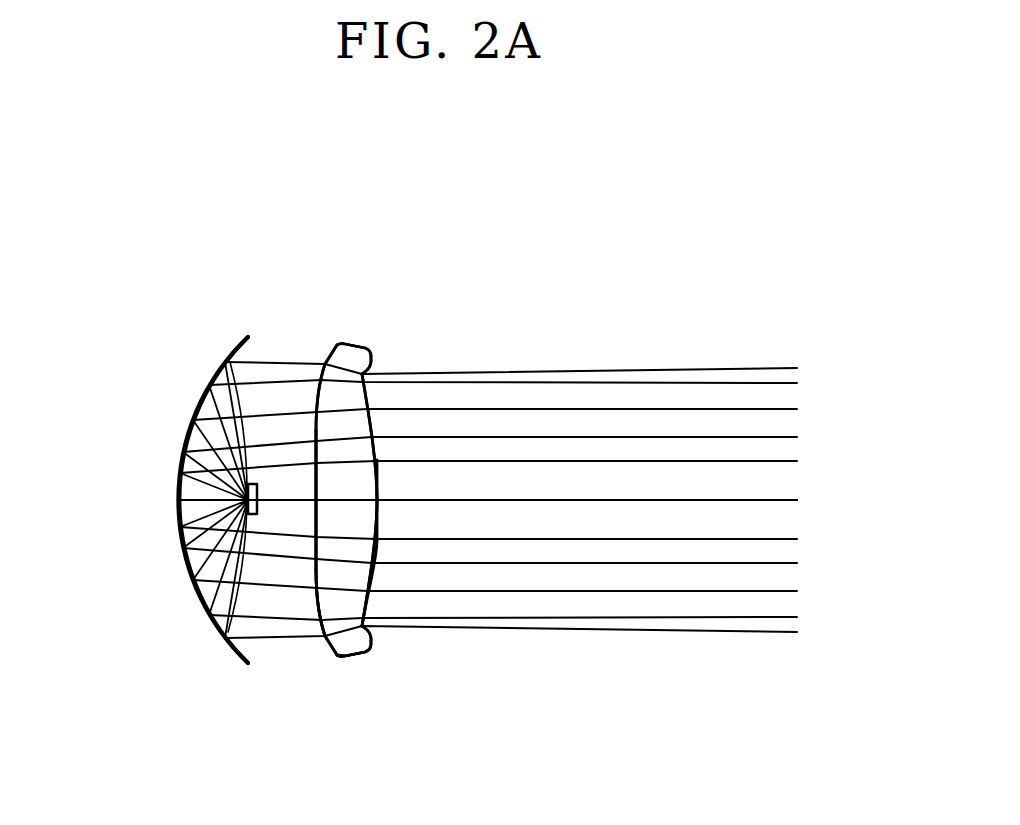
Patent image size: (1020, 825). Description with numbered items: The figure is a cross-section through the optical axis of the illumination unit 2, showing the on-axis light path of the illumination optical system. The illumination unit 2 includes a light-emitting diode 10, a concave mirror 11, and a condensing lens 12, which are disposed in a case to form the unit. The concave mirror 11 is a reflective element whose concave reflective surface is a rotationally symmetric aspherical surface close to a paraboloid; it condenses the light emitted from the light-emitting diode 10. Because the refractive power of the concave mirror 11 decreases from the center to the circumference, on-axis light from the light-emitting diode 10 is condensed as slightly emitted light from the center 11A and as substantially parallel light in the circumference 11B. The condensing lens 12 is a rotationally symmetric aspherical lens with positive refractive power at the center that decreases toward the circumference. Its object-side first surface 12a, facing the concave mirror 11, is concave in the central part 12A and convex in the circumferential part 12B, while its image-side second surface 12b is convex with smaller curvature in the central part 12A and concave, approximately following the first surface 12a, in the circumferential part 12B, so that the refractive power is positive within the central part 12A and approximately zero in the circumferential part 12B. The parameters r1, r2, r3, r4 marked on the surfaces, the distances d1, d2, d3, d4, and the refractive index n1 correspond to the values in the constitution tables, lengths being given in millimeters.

The illumination unit 2 is at (321, 284).
The light-emitting diode 10 is at (258, 495).
The concave mirror 11 is at (204, 497).
The center of the concave mirror 11A is at (165, 425).
The circumference of the concave mirror 11B is at (165, 357).
The condensing lens 12 is at (396, 504).
The first surface 12a is at (325, 363).
The second surface 12b is at (373, 362).
The central part 12A is at (395, 607).
The circumferential part 12B is at (395, 389).
The radius of curvature parameter r1 is at (246, 469).
The radius of curvature parameter r2 is at (250, 663).
The radius of curvature parameter r3 is at (328, 642).
The radius of curvature parameter r4 is at (370, 635).
The refractive index parameter n1 is at (356, 657).
The distance parameter d1 is at (242, 532).
The distance parameter d2 is at (289, 501).
The distance parameter d3 is at (346, 502).
The distance parameter d4 is at (513, 501).